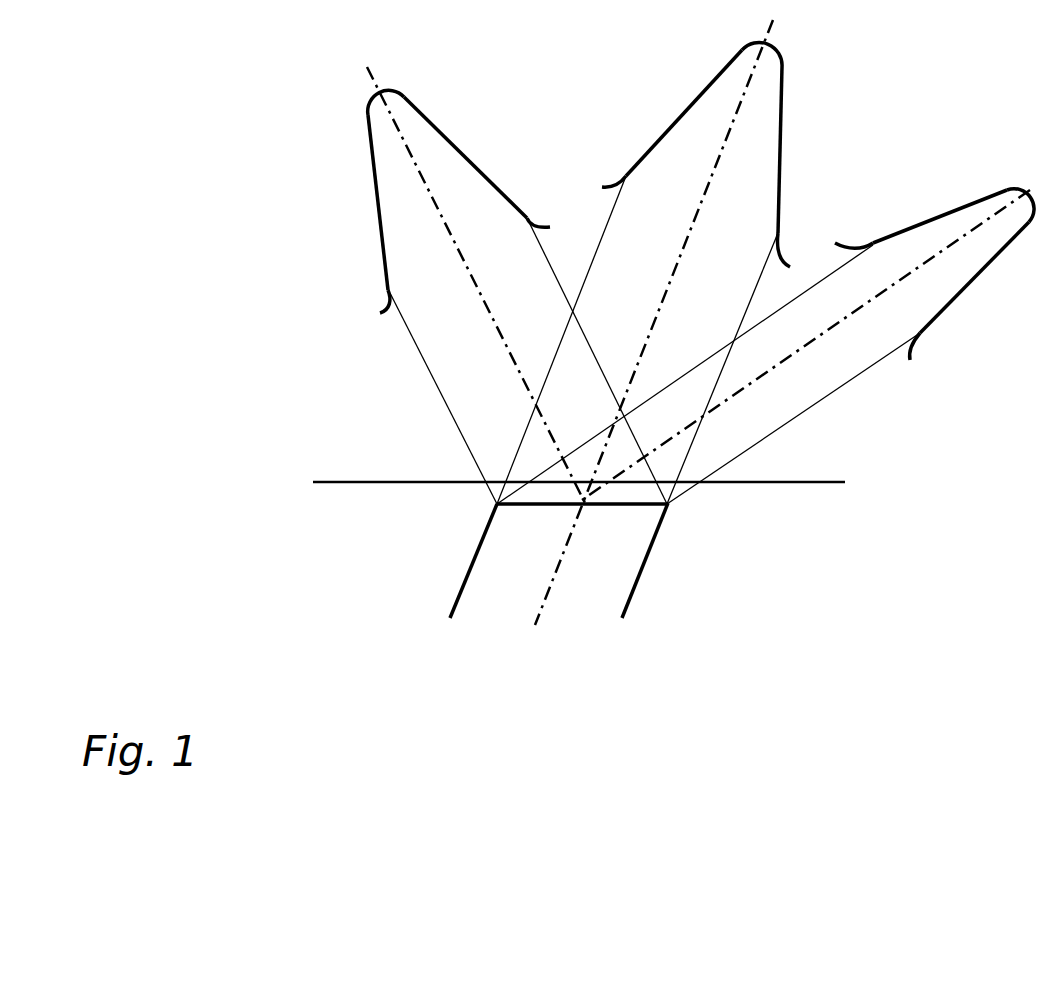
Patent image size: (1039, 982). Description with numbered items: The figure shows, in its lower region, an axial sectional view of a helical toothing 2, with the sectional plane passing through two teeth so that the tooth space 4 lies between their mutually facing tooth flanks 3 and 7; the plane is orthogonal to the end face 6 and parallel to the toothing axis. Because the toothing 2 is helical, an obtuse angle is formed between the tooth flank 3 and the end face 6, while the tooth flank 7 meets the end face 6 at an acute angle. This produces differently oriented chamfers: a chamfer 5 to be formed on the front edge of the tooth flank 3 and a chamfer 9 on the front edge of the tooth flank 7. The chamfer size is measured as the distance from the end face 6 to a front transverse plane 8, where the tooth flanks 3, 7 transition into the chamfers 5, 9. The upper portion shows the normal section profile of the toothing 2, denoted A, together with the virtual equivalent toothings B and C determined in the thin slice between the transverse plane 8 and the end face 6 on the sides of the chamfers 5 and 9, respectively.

The toothing 2 is at (255, 558).
The tooth flank 3 is at (777, 141).
The tooth space 4 is at (525, 654).
The chamfer 5 is at (980, 265).
The end face 6 is at (353, 478).
The tooth flank 7 is at (680, 133).
The front transverse plane 8 is at (623, 508).
The chamfer 9 is at (388, 226).